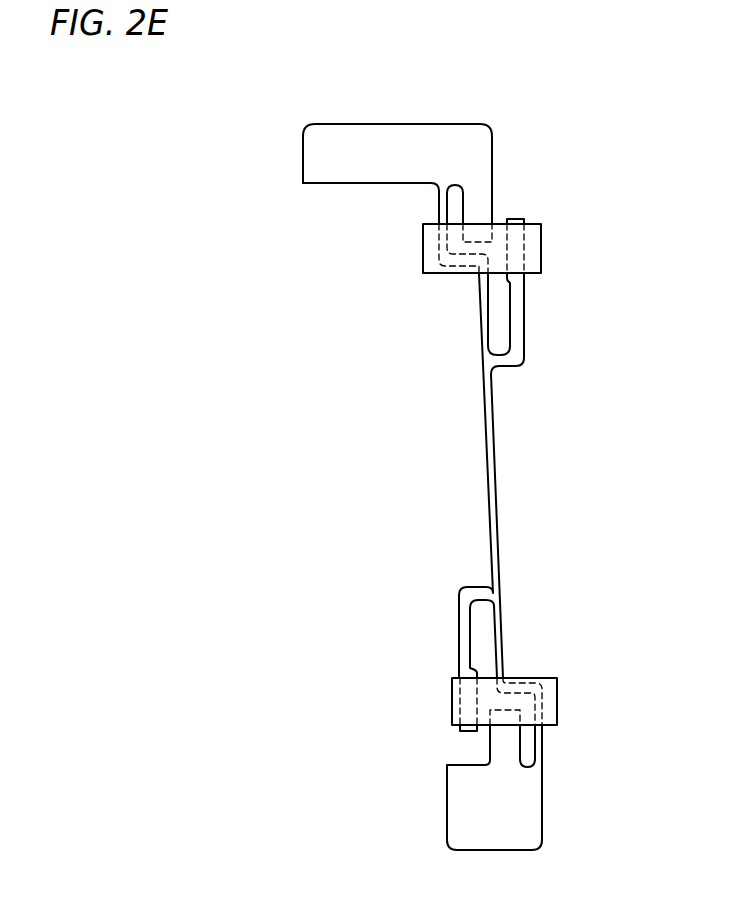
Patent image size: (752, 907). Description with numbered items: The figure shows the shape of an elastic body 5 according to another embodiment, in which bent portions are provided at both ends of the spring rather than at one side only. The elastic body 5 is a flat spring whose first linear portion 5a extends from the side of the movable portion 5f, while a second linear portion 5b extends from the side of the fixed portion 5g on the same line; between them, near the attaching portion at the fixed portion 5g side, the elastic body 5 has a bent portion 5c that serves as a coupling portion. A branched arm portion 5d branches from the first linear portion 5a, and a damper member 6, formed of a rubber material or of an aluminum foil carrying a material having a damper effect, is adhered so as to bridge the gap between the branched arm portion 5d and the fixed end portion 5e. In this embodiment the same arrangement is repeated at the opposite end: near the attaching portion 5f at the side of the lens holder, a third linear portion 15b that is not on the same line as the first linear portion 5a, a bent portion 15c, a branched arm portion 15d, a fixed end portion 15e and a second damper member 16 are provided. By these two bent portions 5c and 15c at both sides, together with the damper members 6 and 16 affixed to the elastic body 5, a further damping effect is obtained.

The elastic body 5 is at (477, 450).
The first linear portion 5a is at (468, 423).
The second linear portion 5b is at (443, 207).
The bent portion 5c is at (455, 262).
The branched arm portion 5d is at (520, 313).
The fixed end portion 5e is at (478, 200).
The movable portion 5f is at (517, 818).
The fixed portion 5g is at (428, 142).
The damper member 6 is at (533, 247).
The third linear portion 15b is at (542, 743).
The bent portion 15c is at (523, 687).
The branched arm portion 15d is at (460, 652).
The fixed end portion 15e is at (500, 750).
The damper member 16 is at (548, 693).